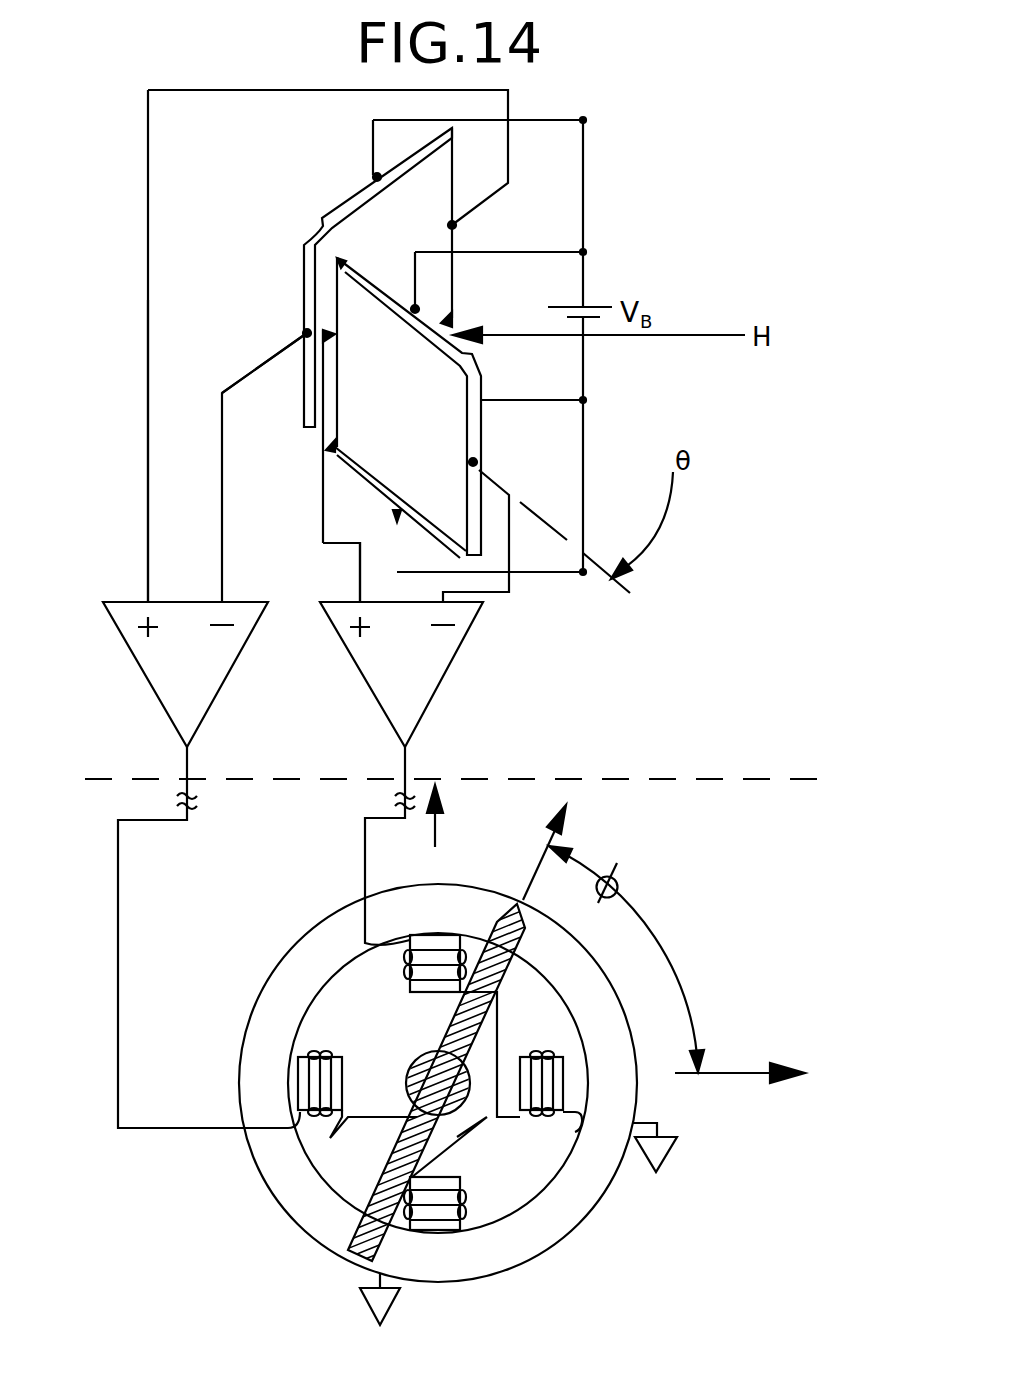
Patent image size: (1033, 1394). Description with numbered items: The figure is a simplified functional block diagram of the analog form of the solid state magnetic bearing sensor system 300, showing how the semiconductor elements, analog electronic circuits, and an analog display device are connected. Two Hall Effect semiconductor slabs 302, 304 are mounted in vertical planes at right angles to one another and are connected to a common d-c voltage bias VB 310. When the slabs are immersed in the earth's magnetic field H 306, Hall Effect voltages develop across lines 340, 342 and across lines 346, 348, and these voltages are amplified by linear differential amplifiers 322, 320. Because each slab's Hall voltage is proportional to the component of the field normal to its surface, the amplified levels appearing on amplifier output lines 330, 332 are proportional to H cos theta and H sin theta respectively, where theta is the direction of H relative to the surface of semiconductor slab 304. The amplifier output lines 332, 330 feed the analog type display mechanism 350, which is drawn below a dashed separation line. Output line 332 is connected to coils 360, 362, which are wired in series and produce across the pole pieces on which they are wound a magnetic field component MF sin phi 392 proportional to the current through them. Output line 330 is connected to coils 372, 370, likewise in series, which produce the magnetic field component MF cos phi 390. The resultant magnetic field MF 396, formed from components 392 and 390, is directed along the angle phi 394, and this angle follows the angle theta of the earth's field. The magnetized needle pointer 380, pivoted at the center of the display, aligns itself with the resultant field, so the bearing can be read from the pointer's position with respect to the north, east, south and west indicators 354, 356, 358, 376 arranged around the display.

The solid state magnetic bearing sensor system 300 is at (628, 175).
The Hall Effect semiconductor slab 302 is at (438, 173).
The Hall Effect semiconductor slab 304 is at (330, 452).
The earth's magnetic field H 306 is at (708, 327).
The d-c voltage bias VB 310 is at (622, 300).
The linear differential amplifier 320 is at (428, 672).
The linear differential amplifier 322 is at (205, 688).
The amplifier output line 330 is at (165, 825).
The amplifier output line 332 is at (363, 852).
The Hall Effect voltage line 340 is at (147, 462).
The Hall Effect voltage line 342 is at (248, 372).
The Hall Effect voltage line 346 is at (345, 548).
The Hall Effect voltage line 348 is at (505, 593).
The analog type display mechanism 350 is at (665, 918).
The indicator 354 is at (466, 840).
The indicator 356 is at (668, 1103).
The indicator 358 is at (465, 1312).
The coil 360 is at (403, 957).
The coil 362 is at (470, 1198).
The coil 370 is at (332, 1138).
The coil 372 is at (568, 1062).
The indicator 376 is at (182, 1058).
The magnetized needle pointer 380 is at (357, 1228).
The magnetic field component MF cos phi 390 is at (782, 1067).
The magnetic field component MF sin phi 392 is at (445, 790).
The angle phi 394 is at (620, 876).
The resultant magnetic field MF 396 is at (570, 812).